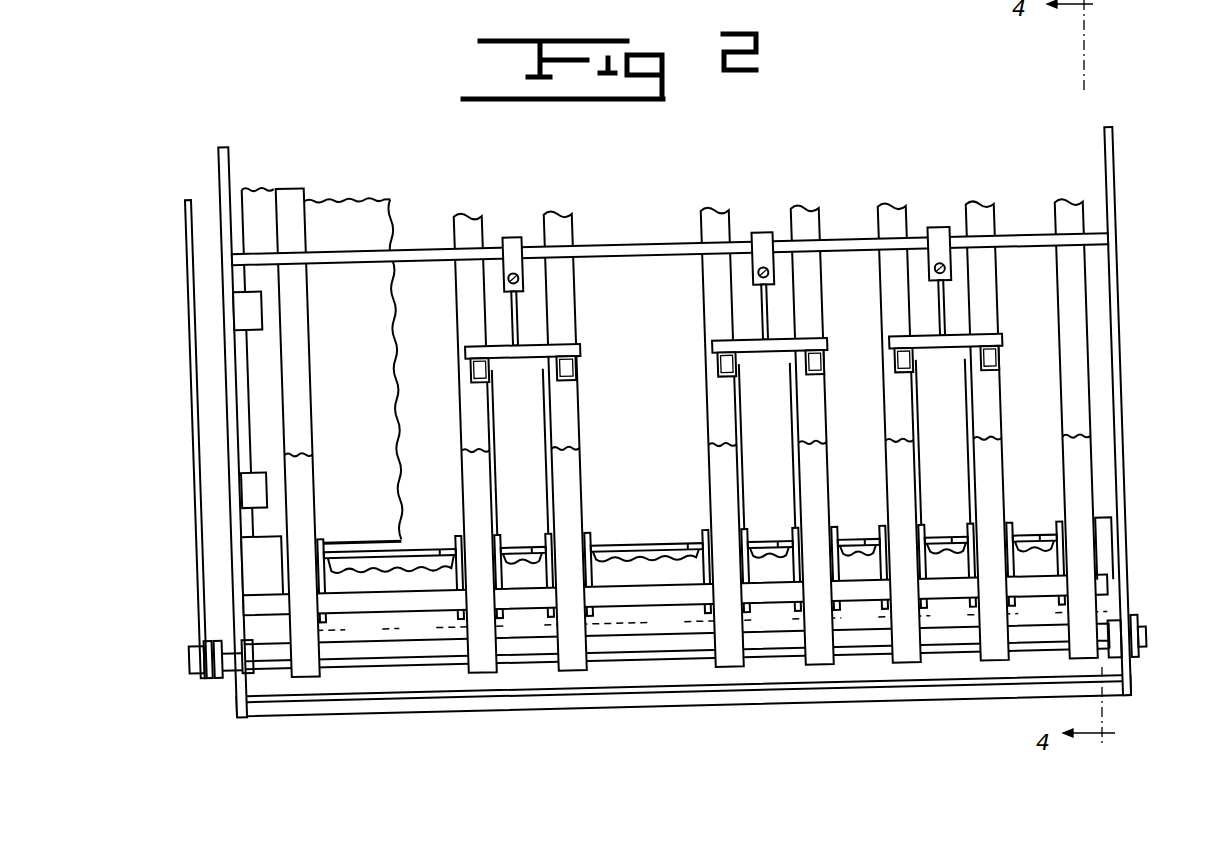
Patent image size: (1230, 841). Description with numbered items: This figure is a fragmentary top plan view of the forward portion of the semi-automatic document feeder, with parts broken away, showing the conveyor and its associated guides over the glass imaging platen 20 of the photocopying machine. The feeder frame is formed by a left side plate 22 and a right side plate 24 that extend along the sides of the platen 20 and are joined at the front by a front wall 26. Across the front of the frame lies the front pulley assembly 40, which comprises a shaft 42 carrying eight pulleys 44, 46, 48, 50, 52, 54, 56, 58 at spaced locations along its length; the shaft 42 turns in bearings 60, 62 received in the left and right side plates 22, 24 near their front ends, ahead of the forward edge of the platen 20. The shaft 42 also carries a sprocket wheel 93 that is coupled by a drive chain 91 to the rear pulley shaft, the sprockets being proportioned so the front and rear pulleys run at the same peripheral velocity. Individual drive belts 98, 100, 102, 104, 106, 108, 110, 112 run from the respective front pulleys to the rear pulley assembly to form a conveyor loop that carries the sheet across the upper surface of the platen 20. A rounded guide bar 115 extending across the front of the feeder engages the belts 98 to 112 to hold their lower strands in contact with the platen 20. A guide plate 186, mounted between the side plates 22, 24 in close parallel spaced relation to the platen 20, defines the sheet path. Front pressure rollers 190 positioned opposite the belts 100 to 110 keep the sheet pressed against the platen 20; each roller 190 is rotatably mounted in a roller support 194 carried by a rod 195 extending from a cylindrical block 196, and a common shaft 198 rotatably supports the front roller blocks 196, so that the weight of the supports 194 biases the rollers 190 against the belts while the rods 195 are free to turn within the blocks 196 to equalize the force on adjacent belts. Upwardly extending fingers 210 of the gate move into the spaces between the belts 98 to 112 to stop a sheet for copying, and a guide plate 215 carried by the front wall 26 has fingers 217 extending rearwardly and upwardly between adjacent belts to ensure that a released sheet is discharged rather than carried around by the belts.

The glass imaging platen 20 is at (387, 203).
The left side plate 22 is at (222, 423).
The right side plate 24 is at (1116, 428).
The front wall 26 is at (882, 716).
The front pulley assembly 40 is at (403, 681).
The shaft 42 is at (256, 670).
The pulley 44 is at (1064, 614).
The pulley 46 is at (975, 616).
The pulley 48 is at (887, 619).
The pulley 50 is at (799, 622).
The pulley 52 is at (702, 626).
The pulley 54 is at (578, 630).
The pulley 56 is at (445, 633).
The pulley 58 is at (335, 635).
The bearing 60 is at (213, 680).
The bearing 62 is at (1127, 640).
The drive chain 91 is at (187, 504).
The sprocket wheel 93 is at (191, 636).
The drive belt 98 is at (1085, 478).
The drive belt 100 is at (998, 448).
The drive belt 102 is at (911, 451).
The drive belt 104 is at (820, 444).
The drive belt 106 is at (737, 442).
The drive belt 108 is at (584, 441).
The drive belt 110 is at (495, 416).
The drive belt 112 is at (312, 435).
The rounded guide bar 115 is at (605, 636).
The guide plate 186 is at (243, 373).
The front pressure roller 190 is at (466, 388).
The roller support 194 is at (465, 352).
The rod 195 is at (510, 308).
The block 196 is at (519, 245).
The common shaft 198 is at (288, 249).
The finger 210 is at (418, 553).
The guide plate 215 is at (809, 696).
The finger 217 is at (321, 540).